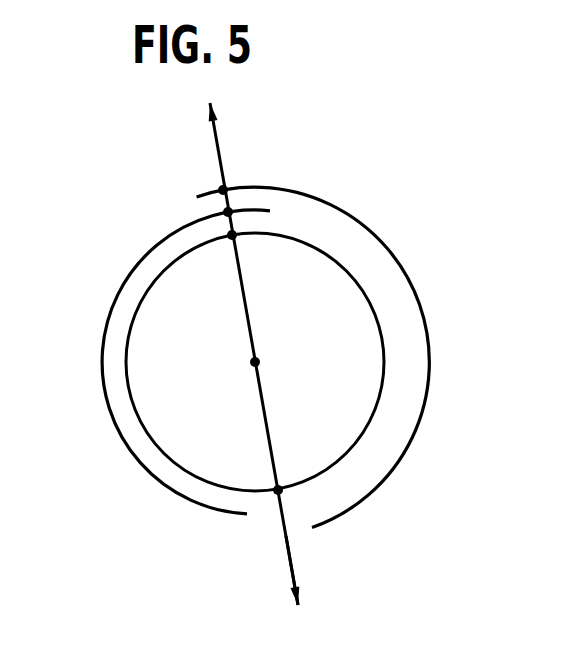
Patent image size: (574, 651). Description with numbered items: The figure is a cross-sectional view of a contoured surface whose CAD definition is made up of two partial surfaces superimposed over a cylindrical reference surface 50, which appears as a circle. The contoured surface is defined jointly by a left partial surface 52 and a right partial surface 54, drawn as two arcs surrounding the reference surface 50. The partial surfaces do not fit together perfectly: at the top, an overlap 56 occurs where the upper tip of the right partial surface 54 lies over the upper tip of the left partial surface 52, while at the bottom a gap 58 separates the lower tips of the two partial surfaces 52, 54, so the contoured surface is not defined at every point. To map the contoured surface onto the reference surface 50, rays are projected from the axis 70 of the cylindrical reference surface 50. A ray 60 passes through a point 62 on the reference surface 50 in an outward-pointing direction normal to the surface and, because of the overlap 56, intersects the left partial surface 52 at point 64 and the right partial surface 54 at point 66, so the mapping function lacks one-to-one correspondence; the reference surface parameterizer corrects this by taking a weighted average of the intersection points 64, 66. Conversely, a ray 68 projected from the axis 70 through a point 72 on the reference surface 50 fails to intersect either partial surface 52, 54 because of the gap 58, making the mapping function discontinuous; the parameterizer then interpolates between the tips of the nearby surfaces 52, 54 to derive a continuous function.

The cylindrical reference surface 50 is at (383, 340).
The left partial surface 52 is at (113, 307).
The right partial surface 54 is at (395, 257).
The overlap 56 is at (190, 211).
The gap 58 is at (263, 524).
The ray 60 is at (212, 140).
The point on the reference surface 62 is at (232, 235).
The intersection point 64 is at (228, 213).
The intersection point 66 is at (223, 190).
The ray 68 is at (292, 552).
The axis 70 is at (255, 363).
The point on the reference surface 72 is at (278, 490).